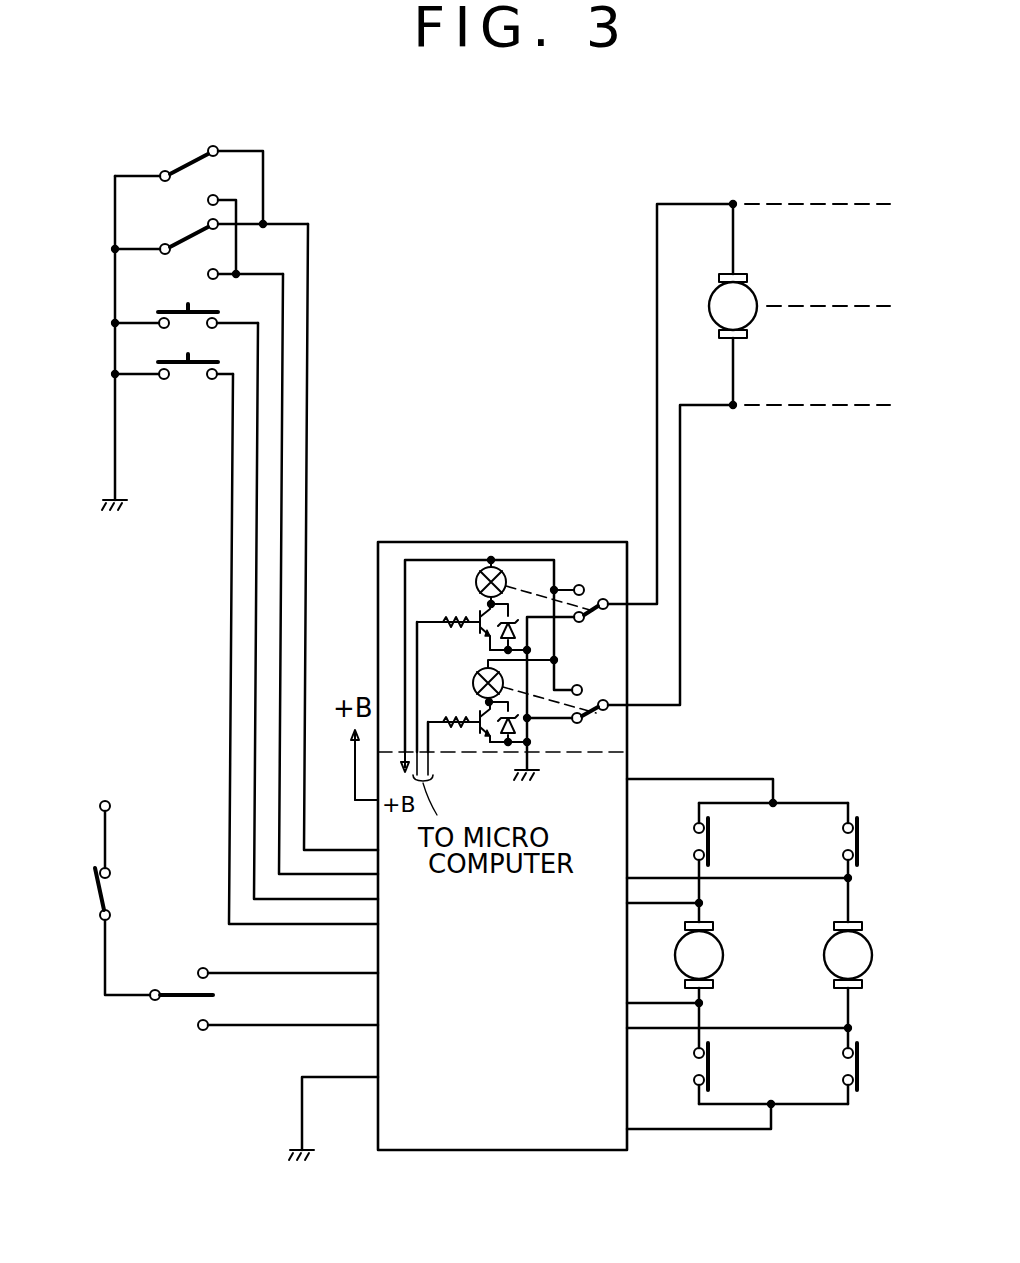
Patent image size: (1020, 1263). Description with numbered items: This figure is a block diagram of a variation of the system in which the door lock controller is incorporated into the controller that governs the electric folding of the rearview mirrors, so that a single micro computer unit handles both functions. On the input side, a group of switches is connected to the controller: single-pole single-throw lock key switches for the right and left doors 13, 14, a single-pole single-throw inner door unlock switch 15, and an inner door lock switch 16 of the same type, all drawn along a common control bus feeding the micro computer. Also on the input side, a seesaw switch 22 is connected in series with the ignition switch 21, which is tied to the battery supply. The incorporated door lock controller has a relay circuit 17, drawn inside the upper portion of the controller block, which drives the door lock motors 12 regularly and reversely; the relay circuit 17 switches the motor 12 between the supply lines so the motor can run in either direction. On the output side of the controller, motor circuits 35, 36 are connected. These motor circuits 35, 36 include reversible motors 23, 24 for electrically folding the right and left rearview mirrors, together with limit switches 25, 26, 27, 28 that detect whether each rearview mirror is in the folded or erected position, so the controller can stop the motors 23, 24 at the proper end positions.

The door lock motors 12 is at (758, 318).
The lock key switch for right door 13 is at (192, 165).
The lock key switch for left door 14 is at (190, 240).
The inner door unlock switch 15 is at (180, 312).
The inner door lock switch 16 is at (180, 380).
The relay circuit 17 is at (583, 562).
The ignition switch 21 is at (95, 897).
The seesaw switch 22 is at (185, 998).
The reversible motor 23 is at (873, 952).
The reversible motor 24 is at (724, 952).
The limit switch 25 is at (862, 848).
The limit switch 26 is at (858, 1062).
The limit switch 27 is at (713, 848).
The limit switch 28 is at (713, 1062).
The motor circuit 35 is at (700, 778).
The motor circuit 36 is at (735, 1131).